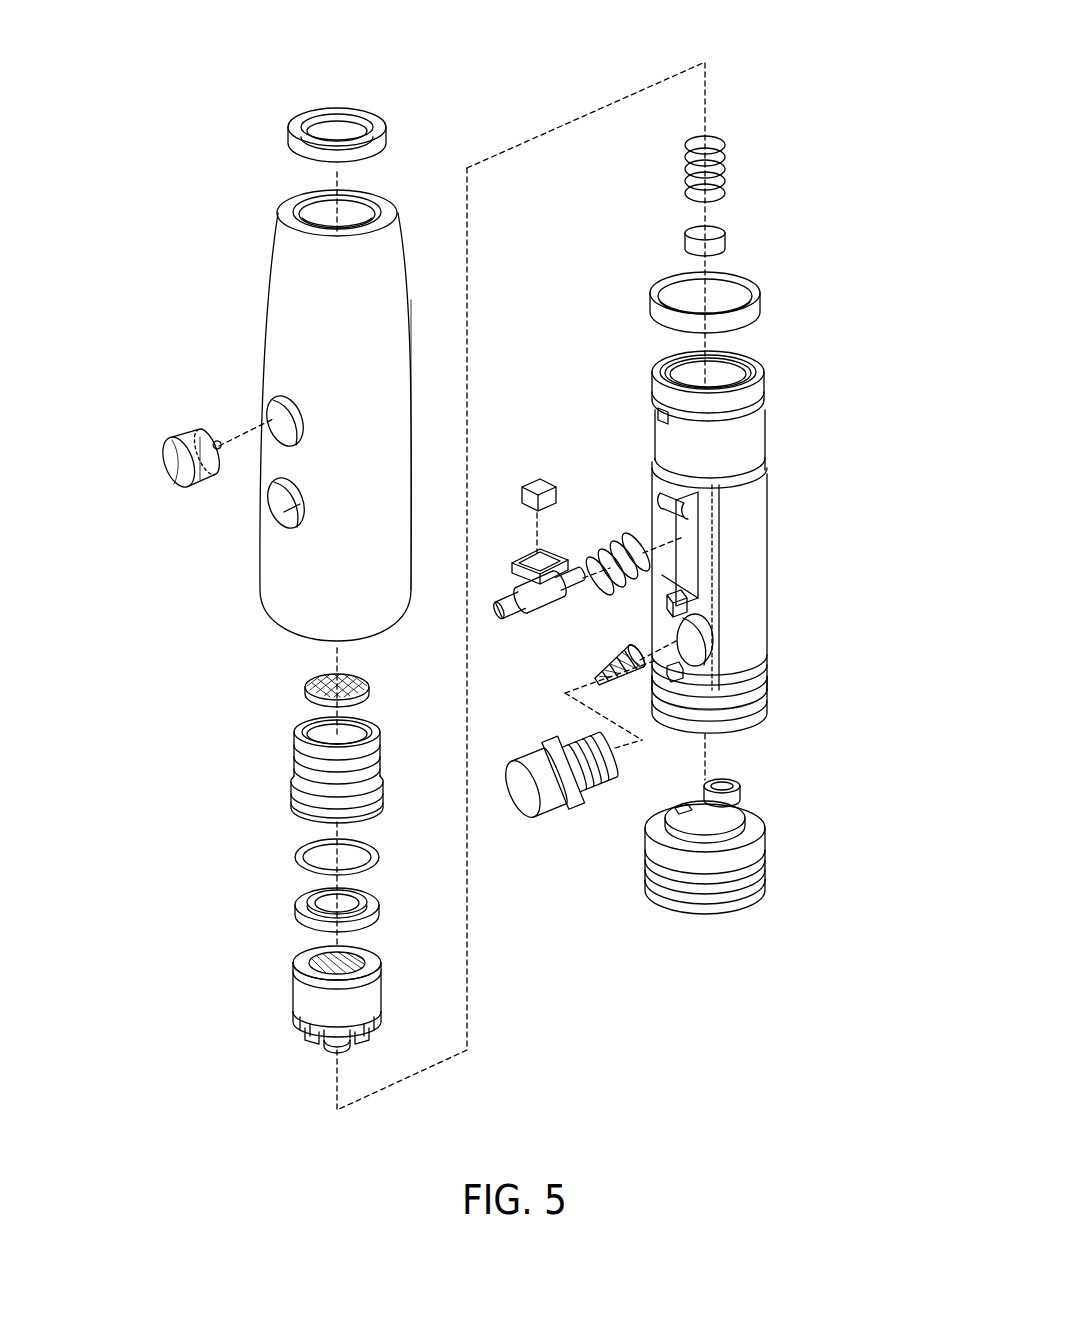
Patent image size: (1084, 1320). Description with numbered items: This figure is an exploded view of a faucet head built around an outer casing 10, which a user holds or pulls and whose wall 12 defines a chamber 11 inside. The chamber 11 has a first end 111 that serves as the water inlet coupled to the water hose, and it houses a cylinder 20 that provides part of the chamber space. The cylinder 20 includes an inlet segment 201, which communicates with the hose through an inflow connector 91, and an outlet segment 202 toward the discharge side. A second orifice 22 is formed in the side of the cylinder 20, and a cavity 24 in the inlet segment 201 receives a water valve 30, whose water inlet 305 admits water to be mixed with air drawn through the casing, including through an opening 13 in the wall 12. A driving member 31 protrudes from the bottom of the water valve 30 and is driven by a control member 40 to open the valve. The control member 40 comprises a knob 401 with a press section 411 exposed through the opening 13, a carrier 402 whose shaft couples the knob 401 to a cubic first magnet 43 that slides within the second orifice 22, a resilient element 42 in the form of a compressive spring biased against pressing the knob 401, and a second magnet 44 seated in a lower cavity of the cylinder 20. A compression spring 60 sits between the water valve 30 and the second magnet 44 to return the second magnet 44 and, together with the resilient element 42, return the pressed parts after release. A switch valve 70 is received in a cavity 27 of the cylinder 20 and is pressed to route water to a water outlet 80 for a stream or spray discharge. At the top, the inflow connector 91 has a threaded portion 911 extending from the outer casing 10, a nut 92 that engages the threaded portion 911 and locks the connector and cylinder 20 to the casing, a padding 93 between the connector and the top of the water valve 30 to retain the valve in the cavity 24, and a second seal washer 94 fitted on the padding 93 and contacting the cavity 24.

The outer casing 10 is at (262, 290).
The chamber 11 is at (310, 208).
The first end 111 is at (358, 208).
The wall 12 is at (401, 362).
The opening 13 is at (277, 407).
The cylinder 20 is at (788, 574).
The inlet segment 201 is at (660, 357).
The outlet segment 202 is at (757, 723).
The second orifice 22 is at (683, 530).
The cavity 24 is at (710, 383).
The cavity 27 is at (693, 633).
The water valve 30 is at (290, 993).
The water inlet 305 is at (353, 965).
The driving member 31 is at (328, 1052).
The control member 40 is at (180, 407).
The knob 401 is at (197, 485).
The carrier 402 is at (533, 622).
The press section 411 is at (173, 473).
The resilient element 42 is at (612, 543).
The first magnet 43 is at (533, 483).
The second magnet 44 is at (687, 237).
The compression spring 60 is at (733, 157).
The switch valve 70 is at (587, 813).
The water outlet 80 is at (737, 917).
The inflow connector 91 is at (292, 790).
The threaded portion 911 is at (298, 753).
The nut 92 is at (293, 123).
The padding 93 is at (297, 905).
The second seal washer 94 is at (297, 853).